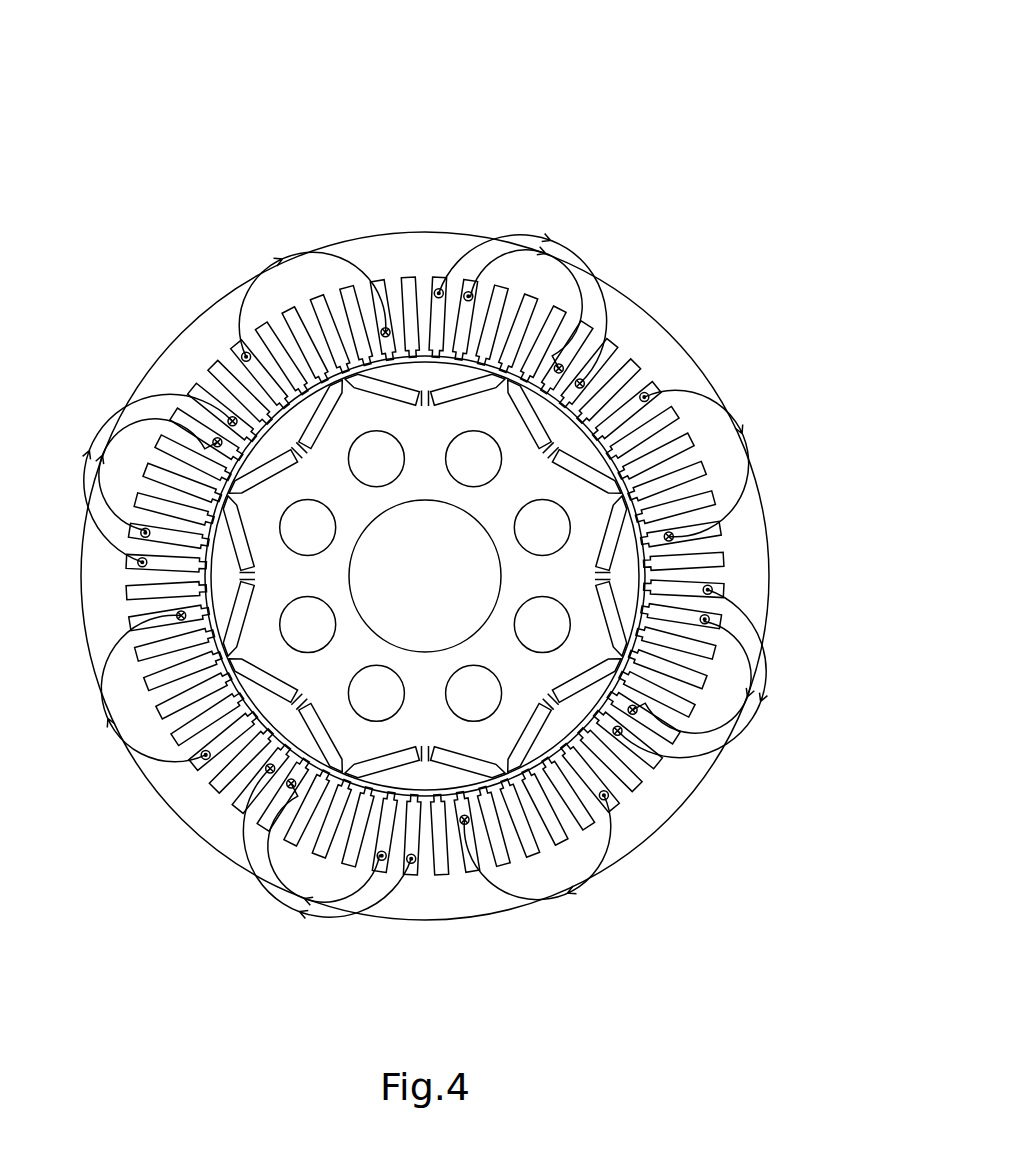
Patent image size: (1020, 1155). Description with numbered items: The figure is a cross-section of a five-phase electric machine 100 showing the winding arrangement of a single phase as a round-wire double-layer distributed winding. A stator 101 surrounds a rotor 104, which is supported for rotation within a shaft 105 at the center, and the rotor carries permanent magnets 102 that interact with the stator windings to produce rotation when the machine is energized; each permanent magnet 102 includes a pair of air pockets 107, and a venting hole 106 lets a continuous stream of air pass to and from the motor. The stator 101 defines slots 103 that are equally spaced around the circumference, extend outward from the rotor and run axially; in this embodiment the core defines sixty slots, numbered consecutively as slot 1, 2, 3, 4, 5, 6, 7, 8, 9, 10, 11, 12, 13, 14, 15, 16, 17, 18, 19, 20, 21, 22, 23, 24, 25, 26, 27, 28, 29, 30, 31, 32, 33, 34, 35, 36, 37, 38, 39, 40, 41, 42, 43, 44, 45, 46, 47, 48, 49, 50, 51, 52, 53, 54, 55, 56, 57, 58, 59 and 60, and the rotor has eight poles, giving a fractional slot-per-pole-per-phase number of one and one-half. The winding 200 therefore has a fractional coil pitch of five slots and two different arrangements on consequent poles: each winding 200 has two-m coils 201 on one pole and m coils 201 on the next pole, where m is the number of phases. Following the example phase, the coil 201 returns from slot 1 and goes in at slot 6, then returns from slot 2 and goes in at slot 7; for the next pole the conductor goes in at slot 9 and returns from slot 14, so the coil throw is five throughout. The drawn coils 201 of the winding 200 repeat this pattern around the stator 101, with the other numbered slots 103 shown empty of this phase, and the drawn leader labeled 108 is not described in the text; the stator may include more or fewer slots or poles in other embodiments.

The electric machine 100 is at (640, 84).
The stator 101 is at (442, 240).
The permanent magnet 102 is at (573, 469).
The slot 103 is at (712, 558).
The rotor 104 is at (653, 690).
The shaft 105 is at (463, 607).
The venting hole 106 is at (374, 703).
The air pocket 107 is at (320, 770).
The coil 108 is at (212, 442).
The winding 200 is at (221, 246).
The coil 201 is at (318, 260).
The slot 1 is at (692, 589).
The slot 2 is at (690, 617).
The slot 3 is at (685, 644).
The slot 4 is at (676, 671).
The slot 5 is at (665, 697).
The slot 6 is at (651, 721).
The slot 7 is at (634, 745).
The slot 8 is at (616, 765).
The slot 9 is at (595, 785).
The slot 10 is at (573, 802).
The slot 11 is at (549, 817).
The slot 12 is at (522, 828).
The slot 13 is at (496, 837).
The slot 14 is at (468, 842).
The slot 15 is at (440, 845).
The slot 16 is at (412, 845).
The slot 17 is at (384, 842).
The slot 18 is at (355, 837).
The slot 19 is at (329, 829).
The slot 20 is at (303, 818).
The slot 21 is at (278, 803).
The slot 22 is at (255, 787).
The slot 23 is at (233, 769).
The slot 24 is at (215, 747).
The slot 25 is at (198, 724).
The slot 26 is at (184, 700).
The slot 27 is at (173, 674).
The slot 28 is at (164, 646).
The slot 29 is at (158, 619).
The slot 30 is at (155, 591).
The slot 31 is at (155, 562).
The slot 32 is at (158, 534).
The slot 33 is at (163, 507).
The slot 34 is at (172, 479).
The slot 35 is at (183, 453).
The slot 36 is at (197, 429).
The slot 37 is at (213, 406).
The slot 38 is at (233, 384).
The slot 39 is at (253, 366).
The slot 40 is at (276, 349).
The slot 41 is at (301, 335).
The slot 42 is at (327, 324).
The slot 43 is at (354, 315).
The slot 44 is at (381, 309).
The slot 45 is at (409, 307).
The slot 46 is at (438, 307).
The slot 47 is at (466, 309).
The slot 48 is at (493, 315).
The slot 49 is at (521, 323).
The slot 50 is at (547, 334).
The slot 51 is at (571, 348).
The slot 52 is at (595, 364).
The slot 53 is at (615, 384).
The slot 54 is at (635, 404).
The slot 55 is at (651, 427).
The slot 56 is at (666, 452).
The slot 57 is at (678, 478).
The slot 58 is at (686, 505).
The slot 59 is at (692, 533).
The slot 60 is at (694, 561).